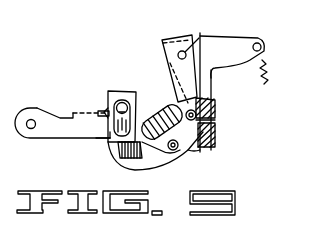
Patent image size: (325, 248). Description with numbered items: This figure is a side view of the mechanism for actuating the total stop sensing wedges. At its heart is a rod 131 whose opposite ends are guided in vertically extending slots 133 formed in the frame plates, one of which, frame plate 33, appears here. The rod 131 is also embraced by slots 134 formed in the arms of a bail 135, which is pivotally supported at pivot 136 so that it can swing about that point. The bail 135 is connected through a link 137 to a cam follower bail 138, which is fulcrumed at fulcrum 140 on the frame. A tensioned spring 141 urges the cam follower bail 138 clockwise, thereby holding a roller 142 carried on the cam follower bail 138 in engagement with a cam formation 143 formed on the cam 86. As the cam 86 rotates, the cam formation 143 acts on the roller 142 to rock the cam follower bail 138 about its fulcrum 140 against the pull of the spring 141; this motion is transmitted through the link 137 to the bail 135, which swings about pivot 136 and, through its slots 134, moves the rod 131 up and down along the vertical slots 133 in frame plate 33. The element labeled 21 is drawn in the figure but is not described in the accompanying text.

The roller 21 is at (142, 112).
The frame plate 33 is at (120, 148).
The cam 86 is at (216, 140).
The rod 131 is at (110, 106).
The vertically extending slot 133 is at (108, 139).
The slot 134 is at (144, 100).
The bail 135 is at (80, 118).
The pivot 136 is at (29, 129).
The link 137 is at (193, 148).
The cam follower bail 138 is at (210, 91).
The fulcrum 140 is at (202, 36).
The tensioned spring 141 is at (265, 60).
The roller 142 is at (213, 115).
The cam formation 143 is at (213, 128).